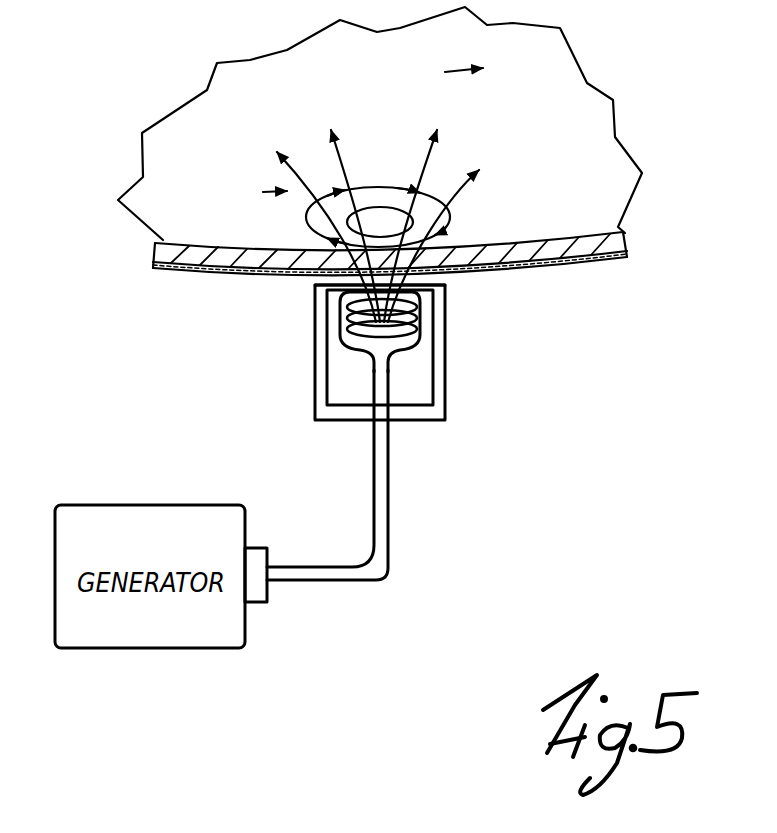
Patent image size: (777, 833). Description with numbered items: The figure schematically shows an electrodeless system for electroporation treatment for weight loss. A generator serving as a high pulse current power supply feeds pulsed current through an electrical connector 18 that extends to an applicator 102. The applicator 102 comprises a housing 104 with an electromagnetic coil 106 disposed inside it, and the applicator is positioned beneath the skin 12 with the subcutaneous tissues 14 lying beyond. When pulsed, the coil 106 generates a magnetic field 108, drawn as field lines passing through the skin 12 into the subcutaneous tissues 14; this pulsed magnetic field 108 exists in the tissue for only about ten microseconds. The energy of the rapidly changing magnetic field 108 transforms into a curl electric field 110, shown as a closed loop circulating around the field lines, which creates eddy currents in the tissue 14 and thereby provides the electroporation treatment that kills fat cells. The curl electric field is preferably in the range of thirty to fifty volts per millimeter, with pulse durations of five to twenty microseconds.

The skin 12 is at (603, 262).
The subcutaneous tissues 14 is at (623, 238).
The electrical connector 18 is at (350, 585).
The applicator 102 is at (446, 426).
The housing 104 is at (442, 382).
The electromagnetic coil 106 is at (420, 343).
The magnetic field 108 is at (335, 160).
The curl electric field 110 is at (307, 233).